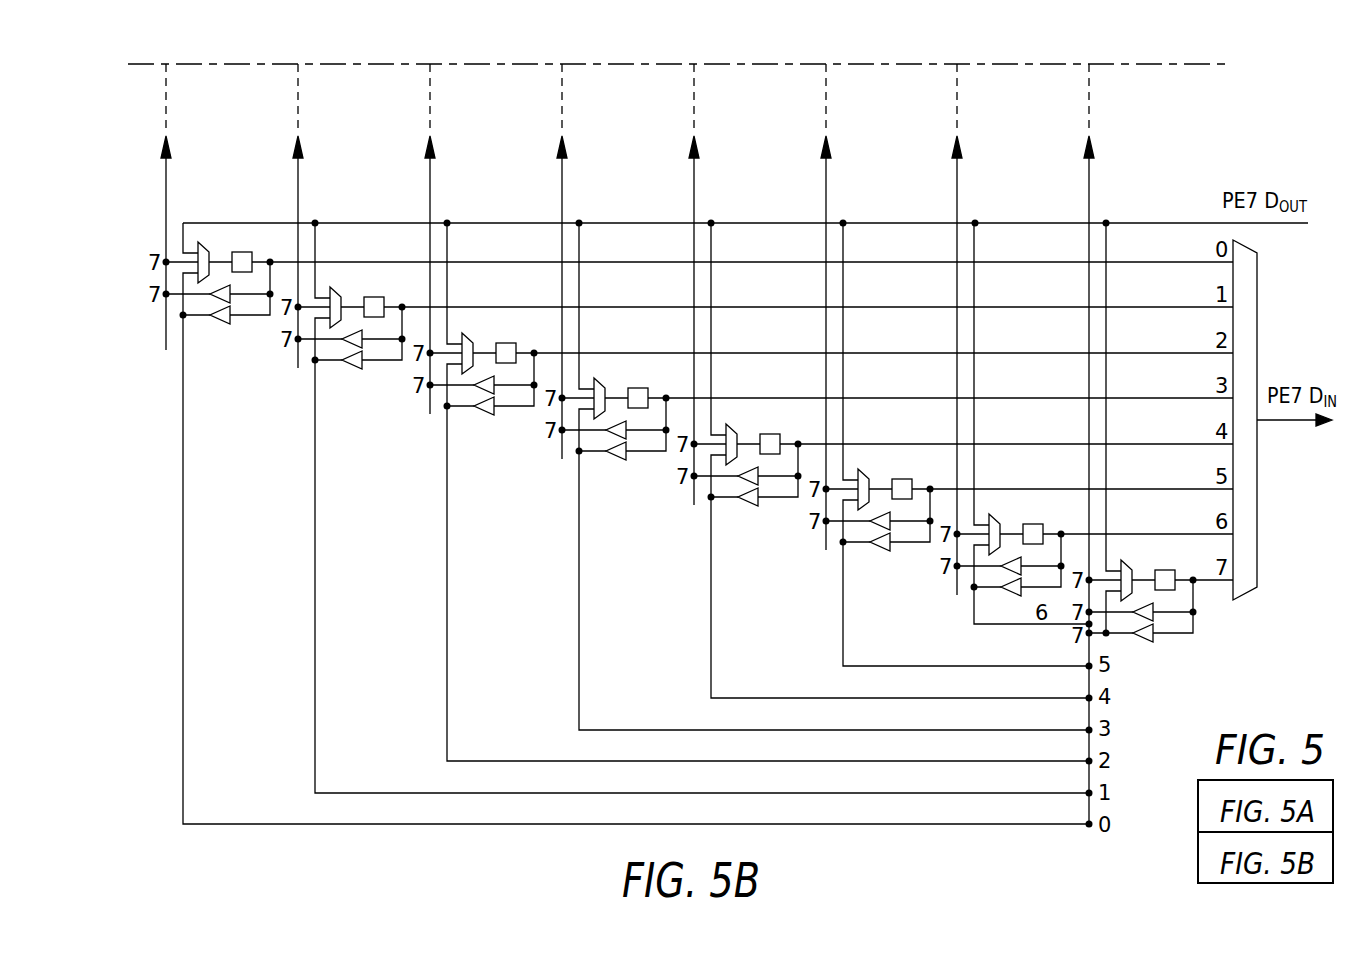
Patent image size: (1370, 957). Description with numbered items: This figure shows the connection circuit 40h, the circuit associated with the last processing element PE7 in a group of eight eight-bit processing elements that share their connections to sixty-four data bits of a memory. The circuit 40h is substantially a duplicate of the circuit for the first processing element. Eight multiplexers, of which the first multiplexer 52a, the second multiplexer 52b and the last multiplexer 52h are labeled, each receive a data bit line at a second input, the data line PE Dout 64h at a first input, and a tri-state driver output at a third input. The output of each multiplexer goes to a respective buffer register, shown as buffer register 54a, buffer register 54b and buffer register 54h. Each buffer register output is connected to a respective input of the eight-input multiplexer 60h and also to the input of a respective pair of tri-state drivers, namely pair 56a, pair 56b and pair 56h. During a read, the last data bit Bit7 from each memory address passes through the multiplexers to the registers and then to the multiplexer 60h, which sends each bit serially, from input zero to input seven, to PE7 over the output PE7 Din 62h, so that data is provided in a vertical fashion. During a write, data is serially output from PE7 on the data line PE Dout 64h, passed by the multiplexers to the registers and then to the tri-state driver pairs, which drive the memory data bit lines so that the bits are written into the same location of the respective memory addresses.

The connection circuit 40h is at (126, 333).
The multiplexer 52a is at (205, 242).
The buffer register 54a is at (237, 252).
The pair of tri-state drivers 56a is at (226, 324).
The multiplexer 52b is at (337, 287).
The buffer register 54b is at (367, 297).
The pair of tri-state drivers 56b is at (356, 369).
The multiplexer 52h is at (1127, 560).
The buffer register 54h is at (1157, 570).
The pair of tri-state drivers 56h is at (1147, 642).
The eight-input multiplexer 60h is at (1258, 290).
The output PE7 Din 62h is at (1285, 424).
The data line PE Dout 64h is at (1190, 208).